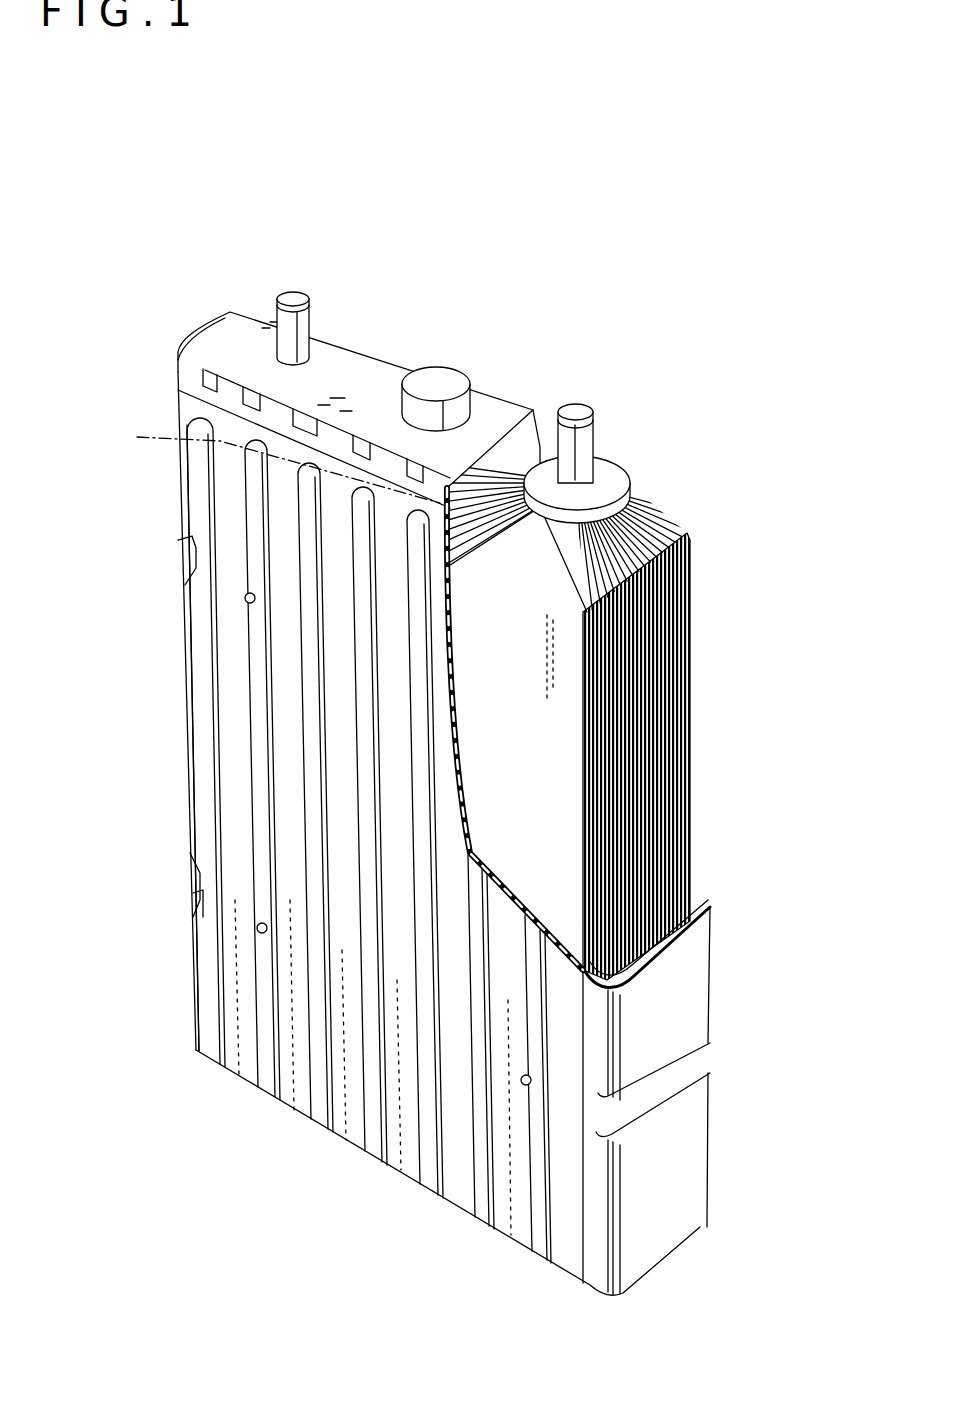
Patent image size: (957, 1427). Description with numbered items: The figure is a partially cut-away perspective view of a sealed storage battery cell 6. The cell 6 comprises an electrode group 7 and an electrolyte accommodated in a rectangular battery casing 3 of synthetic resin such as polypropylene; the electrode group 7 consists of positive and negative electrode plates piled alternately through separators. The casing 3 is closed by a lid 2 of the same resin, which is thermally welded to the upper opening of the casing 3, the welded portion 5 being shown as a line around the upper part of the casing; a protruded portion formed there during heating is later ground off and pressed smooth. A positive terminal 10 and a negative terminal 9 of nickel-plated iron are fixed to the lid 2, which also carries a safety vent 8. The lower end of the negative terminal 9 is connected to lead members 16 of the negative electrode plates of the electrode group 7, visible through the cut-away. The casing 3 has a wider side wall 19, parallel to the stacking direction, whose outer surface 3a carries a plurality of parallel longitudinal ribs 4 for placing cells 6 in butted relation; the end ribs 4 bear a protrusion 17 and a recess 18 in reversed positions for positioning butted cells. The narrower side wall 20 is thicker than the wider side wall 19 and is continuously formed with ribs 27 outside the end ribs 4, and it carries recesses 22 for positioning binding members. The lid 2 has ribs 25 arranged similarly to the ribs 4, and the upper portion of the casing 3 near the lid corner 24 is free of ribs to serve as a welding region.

The lid 2 is at (363, 350).
The battery casing 3 is at (227, 500).
The surface of the wider side wall 3a is at (287, 983).
The ribs 4 is at (257, 760).
The welded portion 5 is at (274, 460).
The cell 6 is at (152, 348).
The electrode group 7 is at (657, 633).
The safety vent 8 is at (443, 380).
The negative terminal 9 is at (577, 410).
The positive terminal 10 is at (293, 300).
The lead members 16 is at (650, 520).
The protrusion 17 is at (245, 597).
The recess 18 is at (257, 923).
The wider side wall 19 is at (463, 1173).
The narrower side wall 20 is at (667, 1240).
The recesses 22 is at (193, 545).
The lid corner 24 is at (223, 360).
The ribs 25 is at (253, 383).
The ribs 27 is at (197, 657).